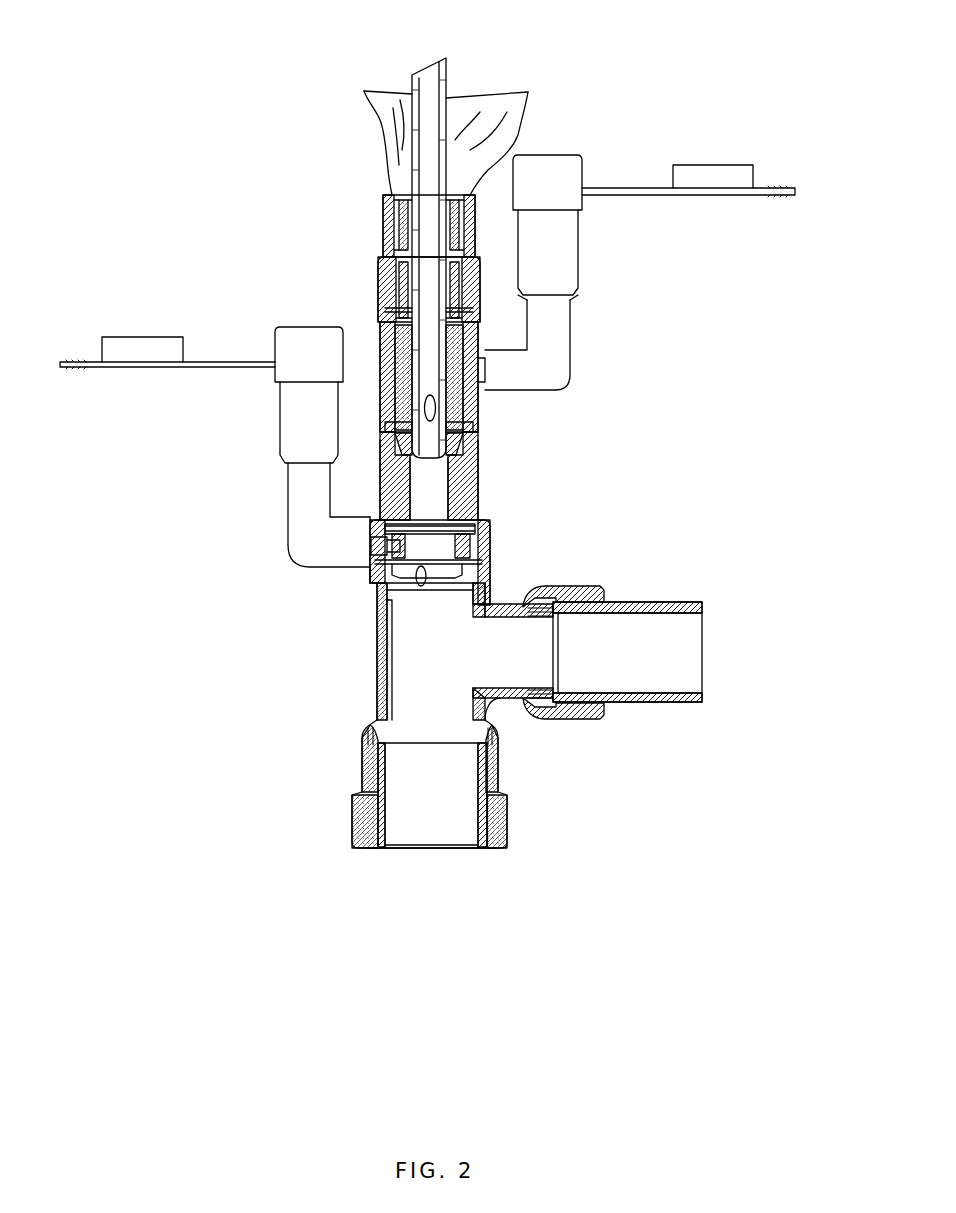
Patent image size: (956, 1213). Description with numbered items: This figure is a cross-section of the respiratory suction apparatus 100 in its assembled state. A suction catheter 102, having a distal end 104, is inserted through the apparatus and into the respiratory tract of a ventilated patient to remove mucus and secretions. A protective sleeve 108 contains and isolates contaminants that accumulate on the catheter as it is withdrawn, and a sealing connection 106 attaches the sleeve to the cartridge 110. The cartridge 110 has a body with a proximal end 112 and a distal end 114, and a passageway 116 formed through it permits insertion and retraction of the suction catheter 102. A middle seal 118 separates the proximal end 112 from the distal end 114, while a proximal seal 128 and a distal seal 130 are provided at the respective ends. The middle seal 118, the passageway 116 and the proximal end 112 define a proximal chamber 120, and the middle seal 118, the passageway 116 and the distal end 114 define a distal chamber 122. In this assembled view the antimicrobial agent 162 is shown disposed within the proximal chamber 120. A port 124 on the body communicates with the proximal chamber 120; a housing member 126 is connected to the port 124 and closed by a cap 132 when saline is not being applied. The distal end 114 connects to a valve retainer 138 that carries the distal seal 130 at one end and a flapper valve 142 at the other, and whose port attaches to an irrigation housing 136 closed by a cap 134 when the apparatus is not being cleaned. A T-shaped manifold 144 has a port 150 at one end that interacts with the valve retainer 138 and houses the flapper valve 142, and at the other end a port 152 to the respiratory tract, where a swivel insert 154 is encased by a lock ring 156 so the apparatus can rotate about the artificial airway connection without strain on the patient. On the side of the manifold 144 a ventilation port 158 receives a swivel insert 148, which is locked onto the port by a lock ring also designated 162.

The respiratory suction apparatus 100 is at (203, 165).
The suction catheter 102 is at (412, 75).
The distal end 104 is at (455, 470).
The sealing connection 106 is at (388, 213).
The protective sleeve 108 is at (528, 98).
The cartridge 110 is at (752, 420).
The proximal end 112 is at (383, 277).
The distal end 114 is at (462, 478).
The passageway 116 is at (400, 368).
The middle seal 118 is at (390, 426).
The proximal chamber 120 is at (448, 398).
The distal chamber 122 is at (442, 500).
The port 124 is at (485, 392).
The housing member 126 is at (572, 255).
The proximal seal 128 is at (395, 315).
The distal seal 130 is at (452, 540).
The cap 132 is at (742, 165).
The cap 134 is at (148, 365).
The irrigation housing 136 is at (302, 395).
The valve retainer 138 is at (372, 568).
The flapper valve 142 is at (482, 578).
The T-shaped manifold 144 is at (378, 660).
The swivel insert 148 is at (645, 602).
The port 150 is at (376, 600).
The port 152 is at (363, 735).
The swivel insert 154 is at (352, 812).
The lock ring 156 is at (355, 852).
The ventilation port 158 is at (506, 700).
The antimicrobial agent 162 is at (407, 357).